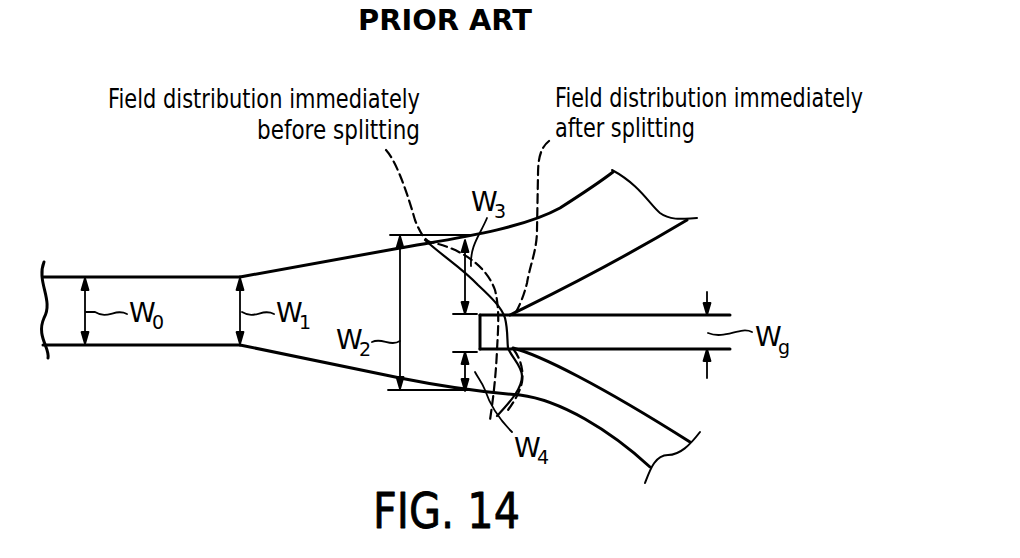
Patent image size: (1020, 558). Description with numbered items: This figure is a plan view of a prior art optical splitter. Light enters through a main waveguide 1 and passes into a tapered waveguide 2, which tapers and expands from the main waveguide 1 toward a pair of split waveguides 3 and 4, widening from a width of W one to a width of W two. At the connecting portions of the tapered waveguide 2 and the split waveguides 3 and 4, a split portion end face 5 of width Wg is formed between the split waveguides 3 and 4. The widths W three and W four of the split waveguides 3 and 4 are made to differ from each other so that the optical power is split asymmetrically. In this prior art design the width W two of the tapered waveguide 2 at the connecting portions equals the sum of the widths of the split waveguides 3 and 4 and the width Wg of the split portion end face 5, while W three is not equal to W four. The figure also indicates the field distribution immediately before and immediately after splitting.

The main waveguide 1 is at (178, 286).
The tapered waveguide 2 is at (336, 275).
The split waveguide 3 is at (650, 200).
The split waveguide 4 is at (666, 454).
The split portion end face 5 is at (478, 333).